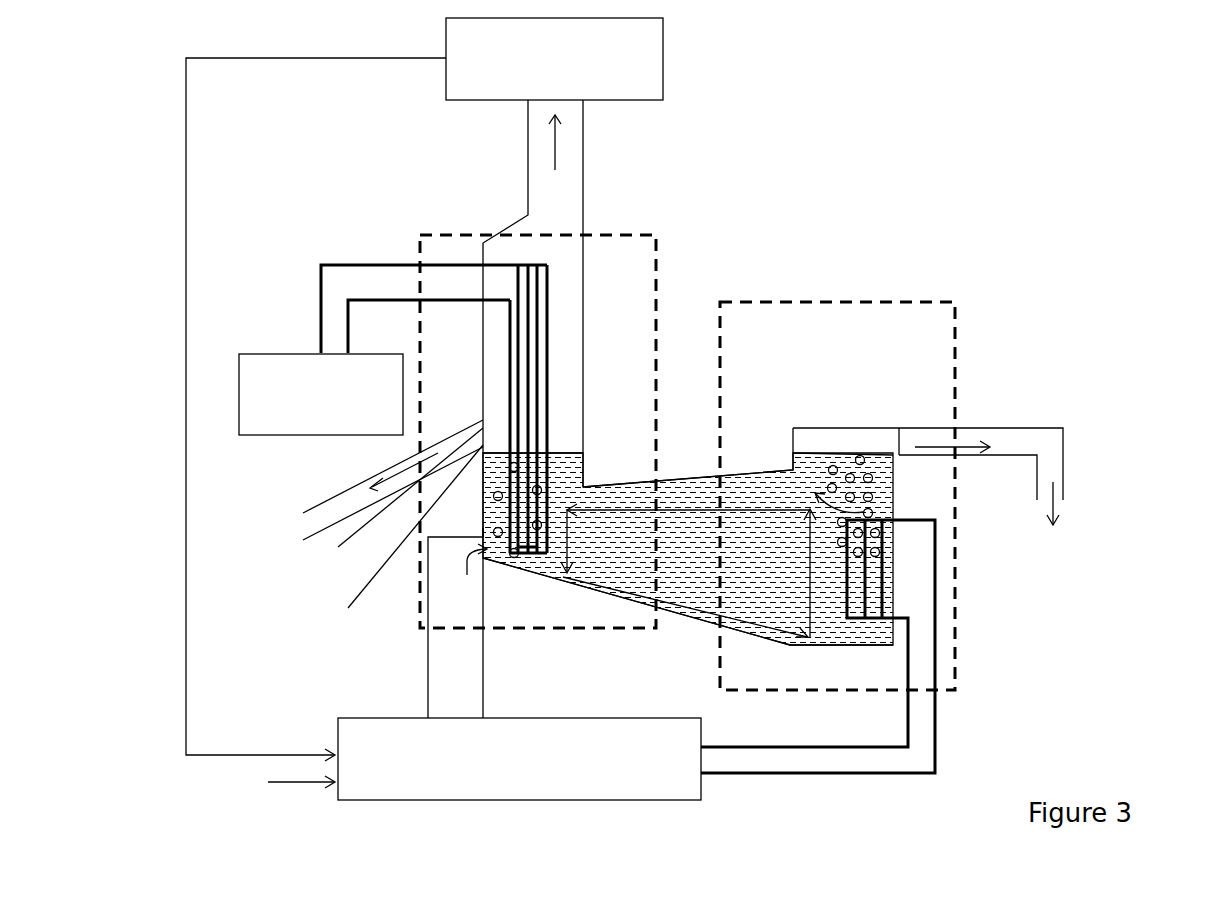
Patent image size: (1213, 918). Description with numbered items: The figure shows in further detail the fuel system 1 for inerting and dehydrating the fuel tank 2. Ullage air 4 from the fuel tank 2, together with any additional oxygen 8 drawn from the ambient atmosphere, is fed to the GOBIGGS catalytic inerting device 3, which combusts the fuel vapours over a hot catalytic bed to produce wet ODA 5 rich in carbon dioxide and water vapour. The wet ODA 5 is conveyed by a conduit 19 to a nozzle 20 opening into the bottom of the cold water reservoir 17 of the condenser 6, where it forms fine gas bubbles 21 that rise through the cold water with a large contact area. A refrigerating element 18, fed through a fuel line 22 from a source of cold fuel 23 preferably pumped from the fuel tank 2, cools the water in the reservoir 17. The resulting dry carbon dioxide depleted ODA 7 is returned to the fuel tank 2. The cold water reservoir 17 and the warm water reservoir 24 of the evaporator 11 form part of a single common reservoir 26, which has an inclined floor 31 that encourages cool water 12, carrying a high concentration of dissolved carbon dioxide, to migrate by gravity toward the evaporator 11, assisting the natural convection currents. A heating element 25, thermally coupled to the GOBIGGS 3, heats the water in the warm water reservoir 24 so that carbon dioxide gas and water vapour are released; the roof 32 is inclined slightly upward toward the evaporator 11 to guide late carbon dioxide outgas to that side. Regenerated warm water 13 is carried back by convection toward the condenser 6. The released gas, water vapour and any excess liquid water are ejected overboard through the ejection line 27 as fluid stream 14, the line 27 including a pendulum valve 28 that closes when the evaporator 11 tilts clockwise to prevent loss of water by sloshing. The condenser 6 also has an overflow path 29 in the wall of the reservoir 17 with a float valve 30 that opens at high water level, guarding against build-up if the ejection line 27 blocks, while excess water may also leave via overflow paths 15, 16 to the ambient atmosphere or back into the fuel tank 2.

The fuel system 1 is at (918, 173).
The fuel tank 2 is at (638, 57).
The GOBIGGS catalytic inerting device 3 is at (655, 773).
The ullage air 4 is at (316, 409).
The wet oxygen depleted air (ODA) 5 is at (467, 575).
The condenser 6 is at (703, 250).
The dry carbon dioxide depleted ODA 7 is at (575, 200).
The additional oxygen 8 is at (220, 778).
The evaporator 11 is at (908, 330).
The cool water 12 is at (683, 607).
The warm water 13 is at (693, 508).
The fluid stream 14 is at (1100, 590).
The overflow path 15 is at (378, 478).
The overflow path 16 is at (378, 478).
The cold water reservoir 17 is at (565, 472).
The refrigerating element 18 is at (527, 383).
The conduit 19 is at (428, 655).
The nozzle 20 is at (483, 528).
The fine gas bubbles 21 is at (485, 505).
The fuel line 22 is at (367, 280).
The source of cold fuel 23 is at (285, 373).
The warm water reservoir 24 is at (882, 500).
The heating element 25 is at (863, 603).
The common reservoir 26 is at (775, 490).
The ejection line 27 is at (1000, 428).
The pendulum valve 28 is at (902, 447).
The overflow path 29 is at (403, 498).
The float valve 30 is at (398, 539).
The inclined floor 31 is at (602, 593).
The roof 32 is at (637, 482).